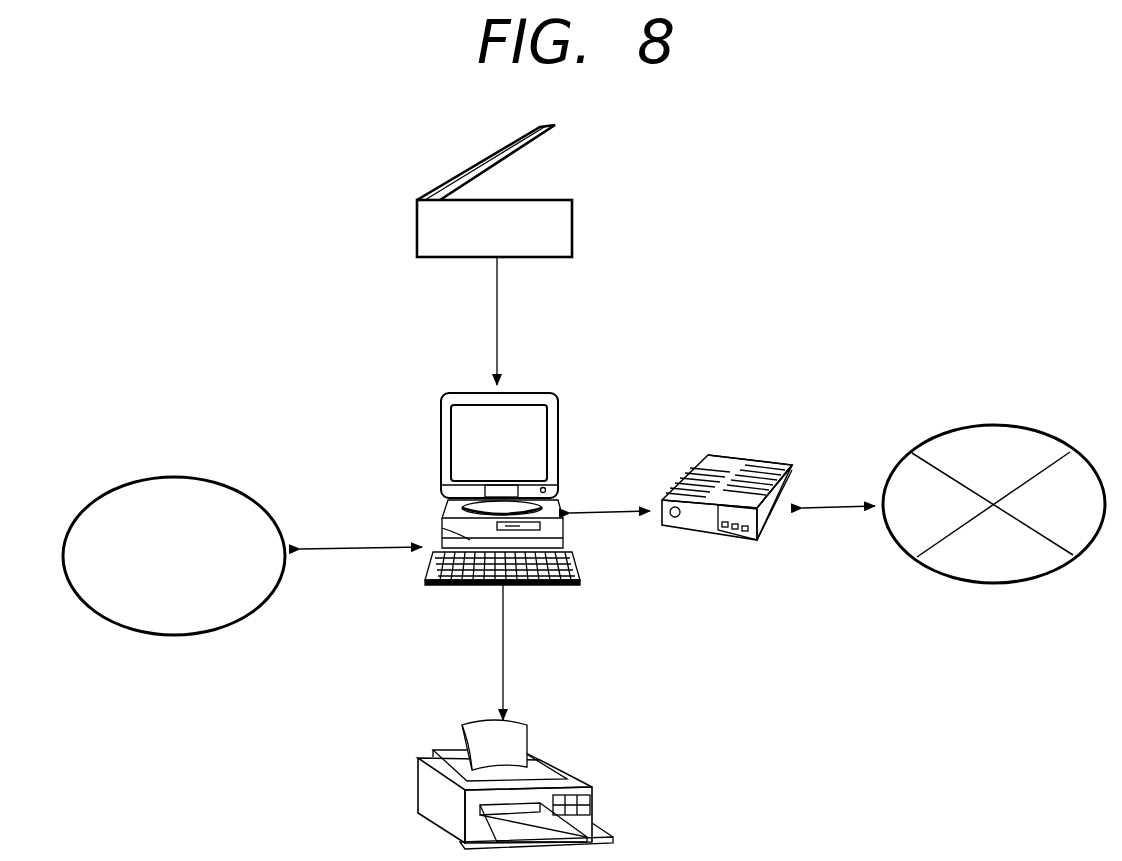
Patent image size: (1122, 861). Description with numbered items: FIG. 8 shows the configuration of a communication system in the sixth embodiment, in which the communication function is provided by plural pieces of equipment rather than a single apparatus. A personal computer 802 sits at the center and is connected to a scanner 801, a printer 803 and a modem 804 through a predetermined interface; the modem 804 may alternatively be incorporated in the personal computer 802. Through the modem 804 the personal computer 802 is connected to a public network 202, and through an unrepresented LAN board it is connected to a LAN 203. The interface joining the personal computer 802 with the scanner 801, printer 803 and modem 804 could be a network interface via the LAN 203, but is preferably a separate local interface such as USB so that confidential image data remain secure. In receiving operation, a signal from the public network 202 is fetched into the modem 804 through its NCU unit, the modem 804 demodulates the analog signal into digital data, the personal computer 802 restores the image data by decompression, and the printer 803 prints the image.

The scanner 801 is at (417, 232).
The personal computer 802 is at (443, 513).
The printer 803 is at (420, 790).
The modem 804 is at (704, 457).
The public network 202 is at (912, 453).
The LAN 203 is at (157, 634).